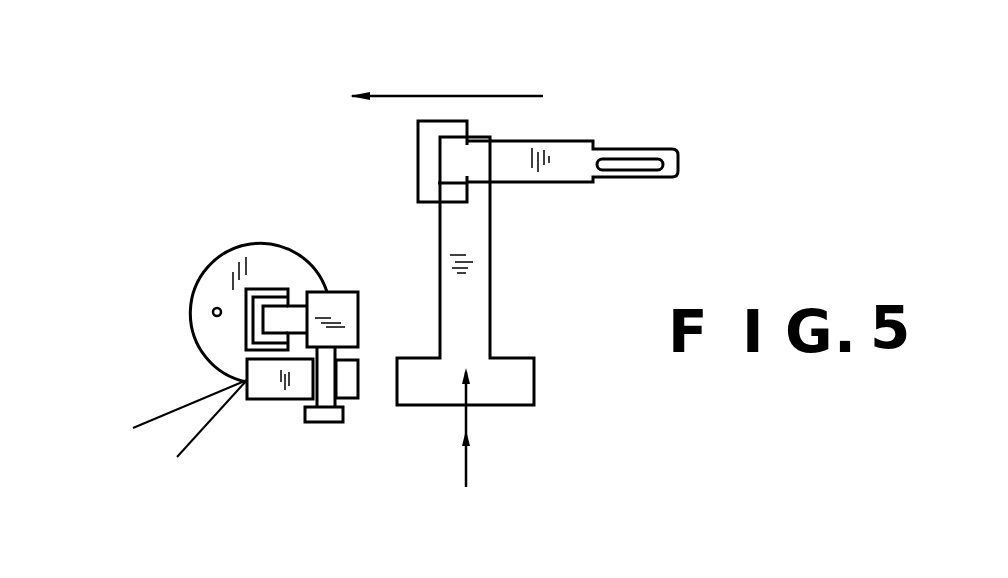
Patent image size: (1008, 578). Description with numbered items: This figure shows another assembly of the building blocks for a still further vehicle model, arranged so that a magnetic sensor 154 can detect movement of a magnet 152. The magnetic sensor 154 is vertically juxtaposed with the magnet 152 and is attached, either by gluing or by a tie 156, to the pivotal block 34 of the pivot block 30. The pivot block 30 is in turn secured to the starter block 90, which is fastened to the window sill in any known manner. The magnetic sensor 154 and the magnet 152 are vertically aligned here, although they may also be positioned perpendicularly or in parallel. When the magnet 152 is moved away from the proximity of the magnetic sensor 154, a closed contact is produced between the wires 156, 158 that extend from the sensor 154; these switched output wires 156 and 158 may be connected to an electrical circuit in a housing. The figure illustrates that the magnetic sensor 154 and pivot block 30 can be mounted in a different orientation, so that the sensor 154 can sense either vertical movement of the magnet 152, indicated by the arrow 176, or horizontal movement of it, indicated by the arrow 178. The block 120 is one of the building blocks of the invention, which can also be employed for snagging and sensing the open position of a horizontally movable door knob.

The pivot block 30 is at (253, 333).
The pivotal block 34 is at (350, 308).
The starter block 90 is at (233, 267).
The block 120 is at (575, 155).
The magnet 152 is at (518, 384).
The magnetic sensor 154 is at (273, 400).
The wire 156 is at (192, 445).
The wire 158 is at (148, 427).
The arrow 176 is at (466, 428).
The arrow 178 is at (480, 96).